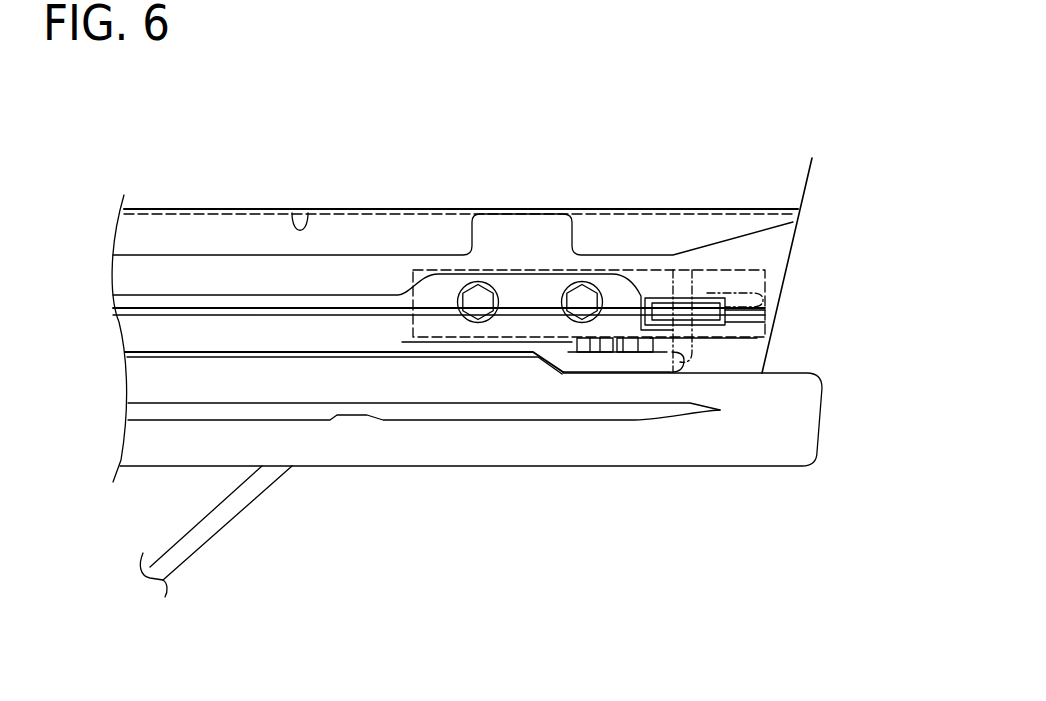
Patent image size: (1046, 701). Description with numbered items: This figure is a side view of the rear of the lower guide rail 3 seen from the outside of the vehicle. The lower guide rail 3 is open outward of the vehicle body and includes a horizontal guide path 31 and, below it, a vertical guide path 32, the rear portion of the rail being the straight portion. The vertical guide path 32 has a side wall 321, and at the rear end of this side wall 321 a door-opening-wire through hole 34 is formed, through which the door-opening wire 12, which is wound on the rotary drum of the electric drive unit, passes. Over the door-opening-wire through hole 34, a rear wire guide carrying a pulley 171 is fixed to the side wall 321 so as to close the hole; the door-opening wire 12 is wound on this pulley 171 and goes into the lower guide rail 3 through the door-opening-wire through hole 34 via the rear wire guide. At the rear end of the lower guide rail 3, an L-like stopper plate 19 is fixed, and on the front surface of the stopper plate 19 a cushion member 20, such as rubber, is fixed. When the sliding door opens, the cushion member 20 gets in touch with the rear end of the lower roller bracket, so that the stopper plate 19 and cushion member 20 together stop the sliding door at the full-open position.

The lower guide rail 3 is at (395, 200).
The door-opening wire 12 is at (224, 308).
The stopper plate 19 is at (630, 366).
The cushion member 20 is at (660, 270).
The horizontal guide path 31 is at (305, 209).
The vertical guide path 32 is at (345, 352).
The door-opening-wire through hole 34 is at (707, 308).
The pulley 171 is at (757, 322).
The side wall 321 is at (372, 330).